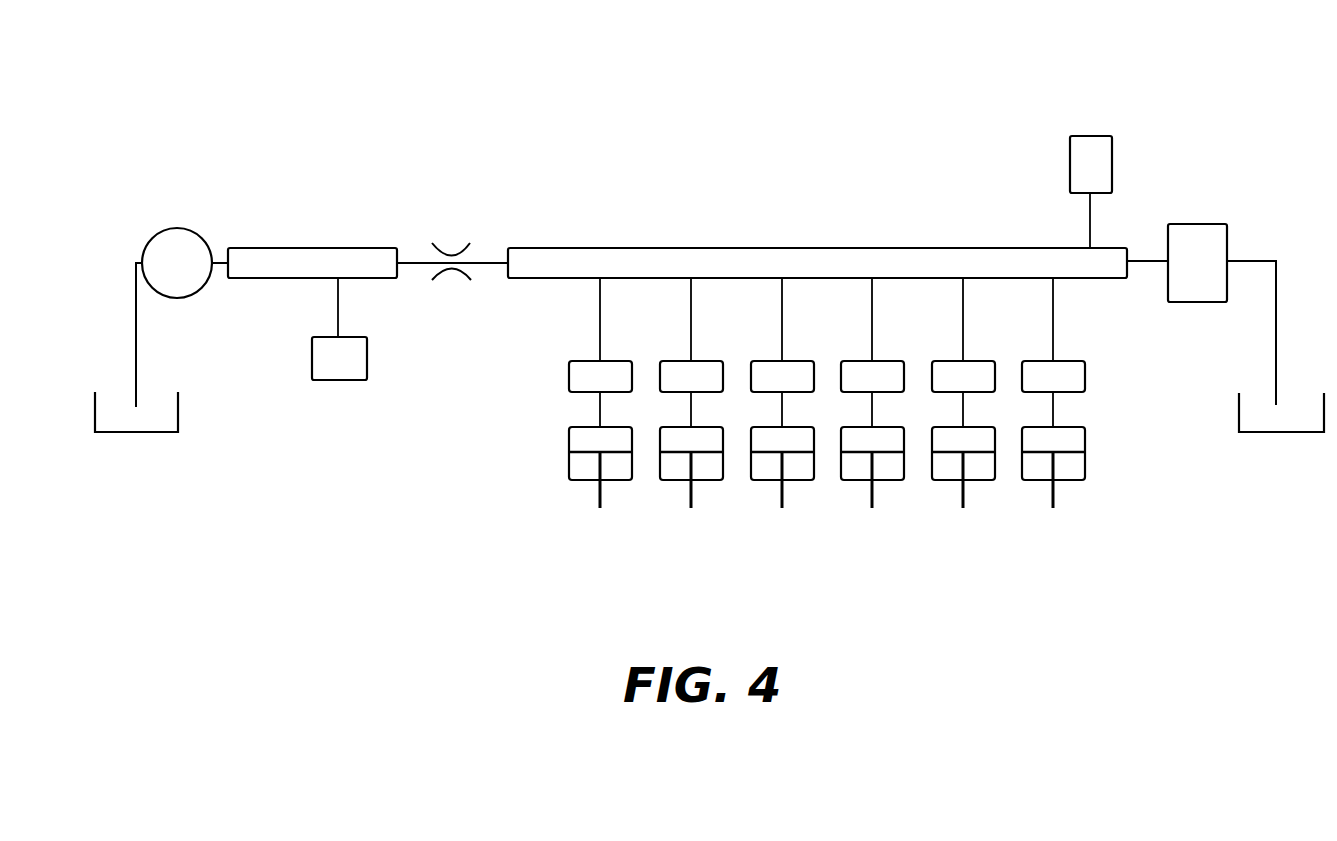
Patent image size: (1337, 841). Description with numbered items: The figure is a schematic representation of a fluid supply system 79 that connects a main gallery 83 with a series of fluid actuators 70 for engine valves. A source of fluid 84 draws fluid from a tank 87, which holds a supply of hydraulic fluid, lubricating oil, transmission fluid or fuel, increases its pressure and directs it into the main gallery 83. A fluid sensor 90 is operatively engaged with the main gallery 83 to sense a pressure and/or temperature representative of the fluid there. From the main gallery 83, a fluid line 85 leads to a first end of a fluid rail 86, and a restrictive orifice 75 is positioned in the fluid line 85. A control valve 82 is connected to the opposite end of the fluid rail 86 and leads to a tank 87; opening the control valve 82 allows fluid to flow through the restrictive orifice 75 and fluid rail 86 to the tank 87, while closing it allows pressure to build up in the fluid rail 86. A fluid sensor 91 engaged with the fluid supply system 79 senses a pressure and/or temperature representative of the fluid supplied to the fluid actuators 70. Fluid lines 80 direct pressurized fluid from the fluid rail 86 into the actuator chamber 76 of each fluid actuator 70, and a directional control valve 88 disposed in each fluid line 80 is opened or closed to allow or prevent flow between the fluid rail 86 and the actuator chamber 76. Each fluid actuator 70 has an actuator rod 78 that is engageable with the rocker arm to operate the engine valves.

The fluid actuator 70 is at (772, 425).
The restrictive orifice 75 is at (452, 268).
The actuator chamber 76 is at (575, 440).
The actuator rod 78 is at (597, 498).
The fluid supply system 79 is at (600, 157).
The fluid line 80 is at (598, 411).
The control valve 82 is at (1189, 224).
The main gallery 83 is at (315, 247).
The source of fluid 84 is at (172, 228).
The fluid line 85 is at (404, 261).
The fluid rail 86 is at (781, 247).
The tank 87 is at (136, 432).
The directional control valve 88 is at (579, 366).
The fluid sensor 90 is at (339, 380).
The fluid sensor 91 is at (1087, 135).